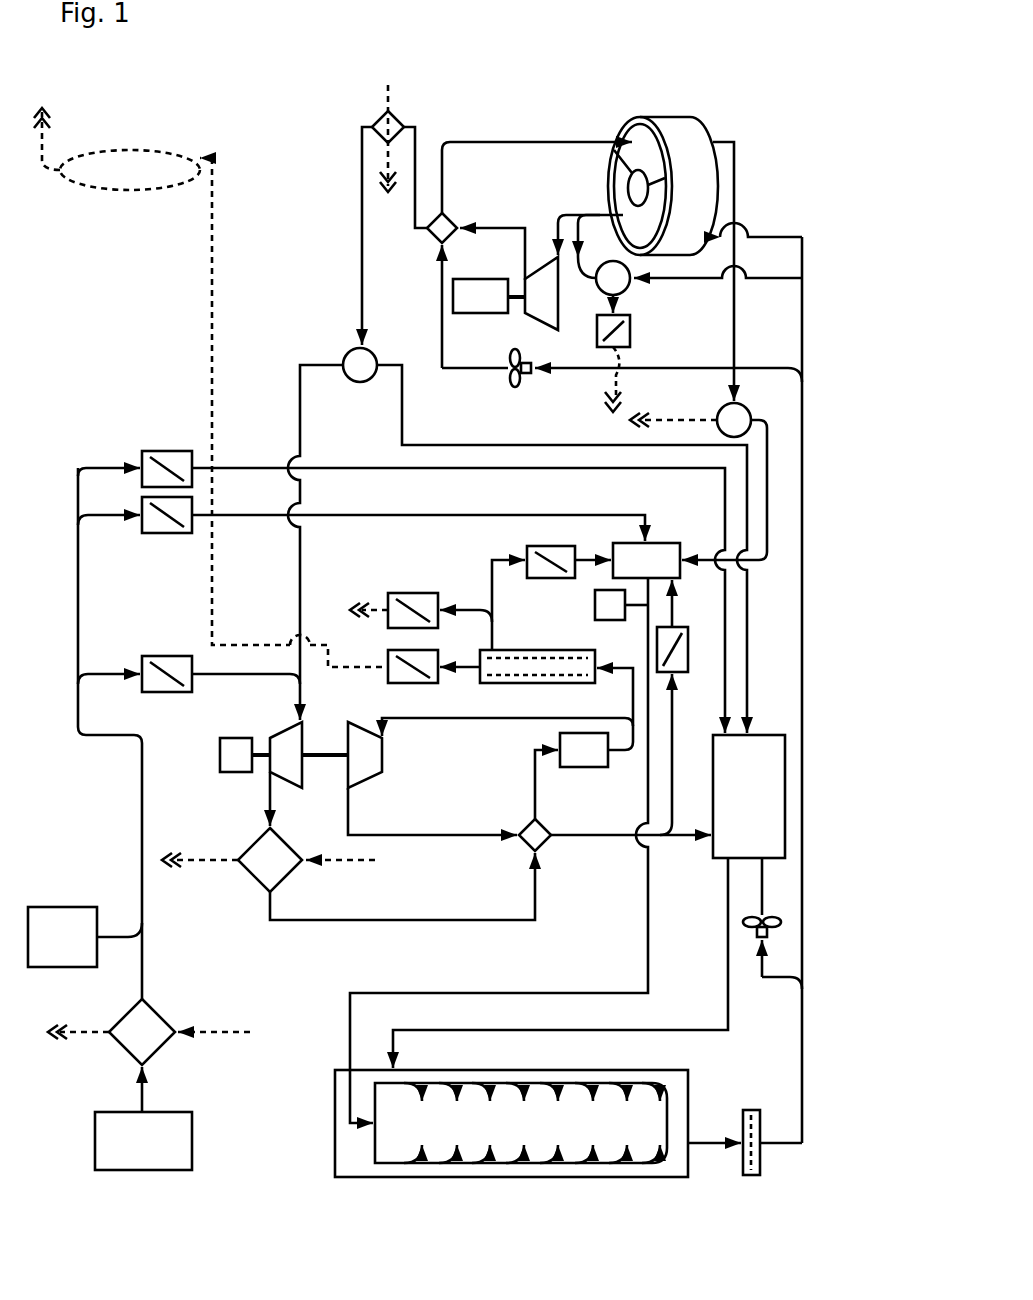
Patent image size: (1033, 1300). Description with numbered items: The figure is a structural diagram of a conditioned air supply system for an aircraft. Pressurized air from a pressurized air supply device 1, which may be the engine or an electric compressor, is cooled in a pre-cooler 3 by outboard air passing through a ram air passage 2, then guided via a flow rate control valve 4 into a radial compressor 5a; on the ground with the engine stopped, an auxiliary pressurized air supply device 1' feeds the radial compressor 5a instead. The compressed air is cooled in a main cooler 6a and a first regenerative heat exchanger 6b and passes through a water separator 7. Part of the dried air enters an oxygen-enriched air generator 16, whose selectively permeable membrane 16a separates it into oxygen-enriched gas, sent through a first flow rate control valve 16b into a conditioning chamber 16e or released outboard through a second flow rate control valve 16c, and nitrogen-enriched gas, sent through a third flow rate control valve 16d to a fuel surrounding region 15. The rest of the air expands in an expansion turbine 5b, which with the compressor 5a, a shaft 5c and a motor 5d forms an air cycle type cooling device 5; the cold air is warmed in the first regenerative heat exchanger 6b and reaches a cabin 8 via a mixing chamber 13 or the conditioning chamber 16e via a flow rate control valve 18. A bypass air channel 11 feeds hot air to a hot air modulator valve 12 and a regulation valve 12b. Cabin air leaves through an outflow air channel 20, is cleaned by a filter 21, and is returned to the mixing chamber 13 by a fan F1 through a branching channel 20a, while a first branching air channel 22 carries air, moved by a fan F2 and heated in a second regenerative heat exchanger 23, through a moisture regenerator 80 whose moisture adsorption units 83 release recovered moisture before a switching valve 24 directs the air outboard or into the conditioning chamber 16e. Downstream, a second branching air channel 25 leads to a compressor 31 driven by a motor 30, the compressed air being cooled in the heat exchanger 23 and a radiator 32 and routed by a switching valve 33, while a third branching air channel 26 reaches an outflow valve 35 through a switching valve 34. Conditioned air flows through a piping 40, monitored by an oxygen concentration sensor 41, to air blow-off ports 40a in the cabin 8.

The pressurized air supply device 1 is at (121, 1114).
The auxiliary pressurized air supply device 1' is at (85, 907).
The ram air passage 2 is at (375, 92).
The pre-cooler 3 is at (160, 1013).
The flow rate control valve 4 is at (166, 655).
The air cycle type cooling device 5 is at (331, 757).
The radial compressor 5a is at (290, 725).
The expansion turbine 5b is at (385, 758).
The shaft 5c is at (322, 765).
The motor 5d is at (236, 773).
The main cooler 6a is at (292, 882).
The first regenerative heat exchanger 6b is at (545, 850).
The water separator 7 is at (590, 768).
The cabin 8 is at (492, 1147).
The bypass air channel 11 is at (78, 510).
The hot air modulator valve 12 is at (168, 450).
The regulation valve 12b is at (155, 535).
The mixing chamber 13 is at (765, 745).
The fuel surrounding region 15 is at (160, 145).
The oxygen-enriched air generator 16 is at (537, 637).
The selectively permeable membrane 16a is at (505, 655).
The first flow rate control valve 16b is at (525, 552).
The second flow rate control valve 16c is at (398, 592).
The third flow rate control valve 16d is at (392, 683).
The conditioning chamber 16e is at (655, 555).
The flow rate control valve 18 is at (685, 676).
The outflow air channel 20 is at (712, 1140).
The branching channel 20a is at (778, 980).
The filter 21 is at (760, 1108).
The first branching air channel 22 is at (790, 380).
The second regenerative heat exchanger 23 is at (455, 215).
The switching valve 24 is at (720, 410).
The second branching air channel 25 is at (555, 235).
The third branching air channel 26 is at (578, 290).
The motor 30 is at (468, 288).
The compressor 31 is at (535, 322).
The radiator 32 is at (428, 106).
The switching valve 33 is at (360, 384).
The switching valve 34 is at (630, 290).
The outflow valve 35 is at (630, 330).
The piping 40 is at (580, 990).
The air blow-off port 40a is at (455, 1105).
The oxygen concentration sensor 41 is at (614, 612).
The moisture regenerator 80 is at (673, 166).
The moisture adsorption unit 83 is at (620, 125).
The fan F1 is at (755, 935).
The fan F2 is at (527, 375).